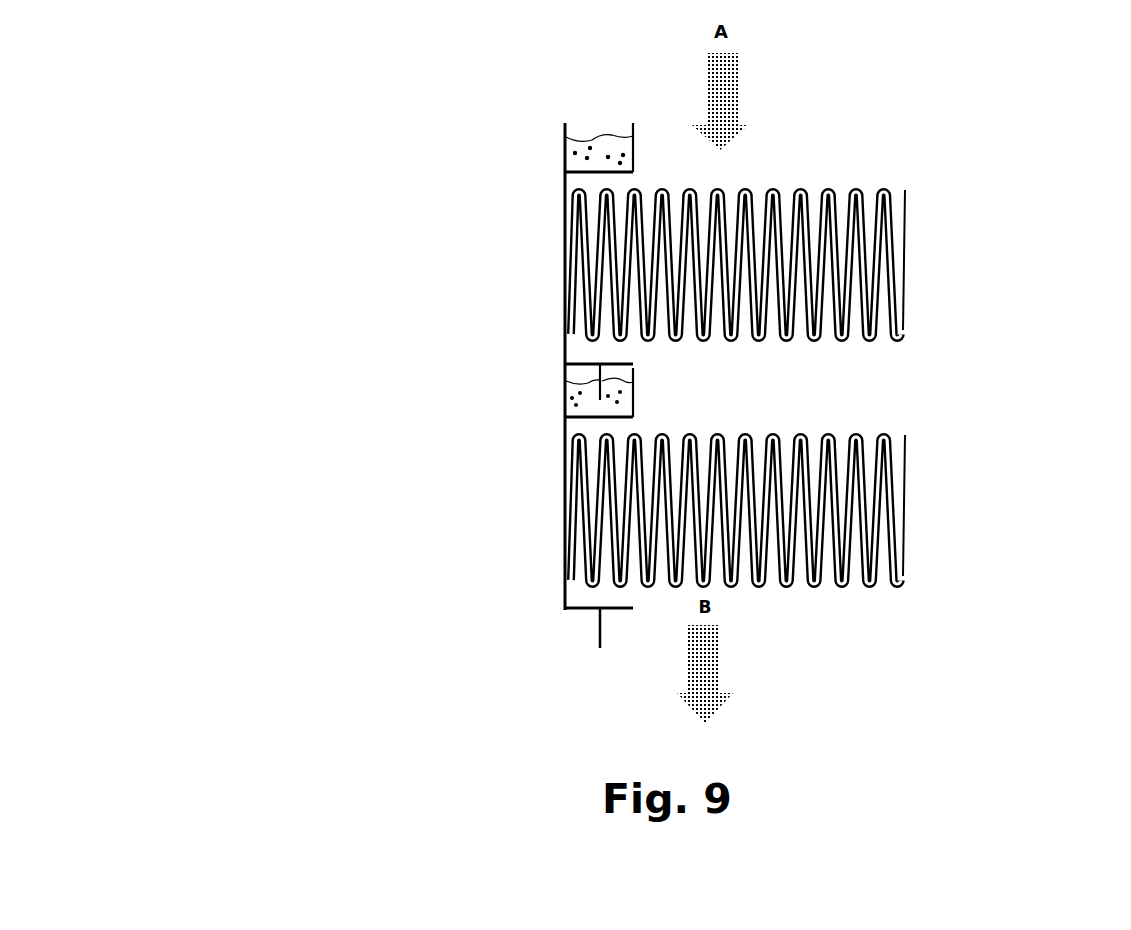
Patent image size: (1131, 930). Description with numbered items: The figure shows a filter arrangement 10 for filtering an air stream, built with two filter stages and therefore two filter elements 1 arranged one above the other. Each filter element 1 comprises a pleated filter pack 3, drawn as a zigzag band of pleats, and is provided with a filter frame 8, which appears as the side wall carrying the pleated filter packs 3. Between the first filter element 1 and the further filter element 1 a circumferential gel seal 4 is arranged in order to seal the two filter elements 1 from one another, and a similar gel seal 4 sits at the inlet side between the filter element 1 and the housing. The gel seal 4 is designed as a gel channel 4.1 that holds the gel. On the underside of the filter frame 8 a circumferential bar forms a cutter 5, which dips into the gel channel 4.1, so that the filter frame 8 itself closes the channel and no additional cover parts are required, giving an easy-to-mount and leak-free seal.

The filter element 1 is at (988, 457).
The pleated filter pack 3 is at (910, 207).
The circumferential gel seal 4 is at (366, 378).
The gel channel 4.1 is at (562, 392).
The cutter 5 is at (590, 402).
The filter frame 8 is at (562, 270).
The filter arrangement 10 is at (982, 161).